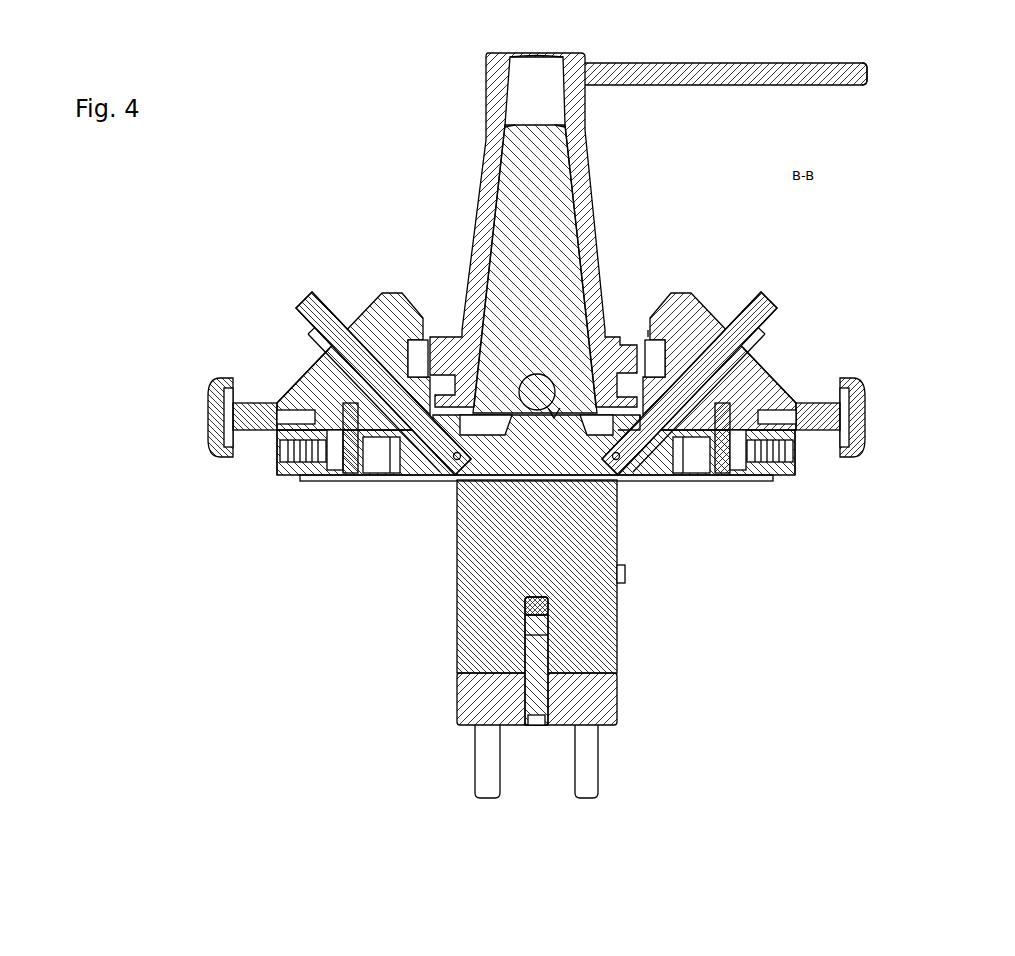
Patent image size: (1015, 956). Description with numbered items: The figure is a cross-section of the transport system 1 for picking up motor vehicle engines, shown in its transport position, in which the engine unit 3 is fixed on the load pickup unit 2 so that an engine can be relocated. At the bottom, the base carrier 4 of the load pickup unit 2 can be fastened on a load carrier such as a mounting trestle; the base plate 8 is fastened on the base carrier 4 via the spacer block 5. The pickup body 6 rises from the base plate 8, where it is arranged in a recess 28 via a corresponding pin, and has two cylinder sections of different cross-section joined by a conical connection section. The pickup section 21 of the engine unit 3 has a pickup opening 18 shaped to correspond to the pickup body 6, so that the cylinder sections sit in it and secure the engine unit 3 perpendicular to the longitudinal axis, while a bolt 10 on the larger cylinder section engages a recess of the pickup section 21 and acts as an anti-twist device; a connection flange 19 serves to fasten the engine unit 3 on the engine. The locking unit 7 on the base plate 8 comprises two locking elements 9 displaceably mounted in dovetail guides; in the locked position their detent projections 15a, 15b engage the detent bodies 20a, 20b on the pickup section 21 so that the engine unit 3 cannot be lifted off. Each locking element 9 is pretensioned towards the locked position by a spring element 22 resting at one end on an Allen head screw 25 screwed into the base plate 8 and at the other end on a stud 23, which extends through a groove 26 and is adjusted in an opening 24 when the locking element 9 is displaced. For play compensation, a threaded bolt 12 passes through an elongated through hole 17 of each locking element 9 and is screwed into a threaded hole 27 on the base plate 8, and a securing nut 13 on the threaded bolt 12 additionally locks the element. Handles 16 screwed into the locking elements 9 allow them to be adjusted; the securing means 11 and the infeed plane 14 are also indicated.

The transport system 1 is at (934, 599).
The load pickup unit 2 is at (358, 564).
The engine unit 3 is at (699, 49).
The base carrier 4 is at (592, 707).
The spacer block 5 is at (483, 603).
The pickup body 6 is at (523, 197).
The locking unit 7 is at (904, 375).
The base plate 8 is at (418, 462).
The locking elements 9 is at (313, 390).
The bolt 10 is at (535, 397).
The securing means 11 is at (804, 266).
The threaded bolt 12 is at (307, 298).
The securing nut 13 is at (345, 305).
The infeed plane 14 is at (428, 308).
The detent projection 15a is at (650, 335).
The detent projection 15b is at (422, 387).
The handle 16 is at (850, 410).
The through hole 17 is at (743, 367).
The pickup opening 18 is at (557, 210).
The connection flange 19 is at (848, 72).
The detent body 20a is at (636, 352).
The detent body 20b is at (623, 430).
The pickup section 21 is at (487, 185).
The spring element 22 is at (782, 453).
The stud 23 is at (723, 433).
The opening 24 is at (377, 462).
The Allen head screw 25 is at (780, 447).
The groove 26 is at (793, 447).
The threaded hole 27 is at (557, 412).
The recess 28 is at (620, 518).